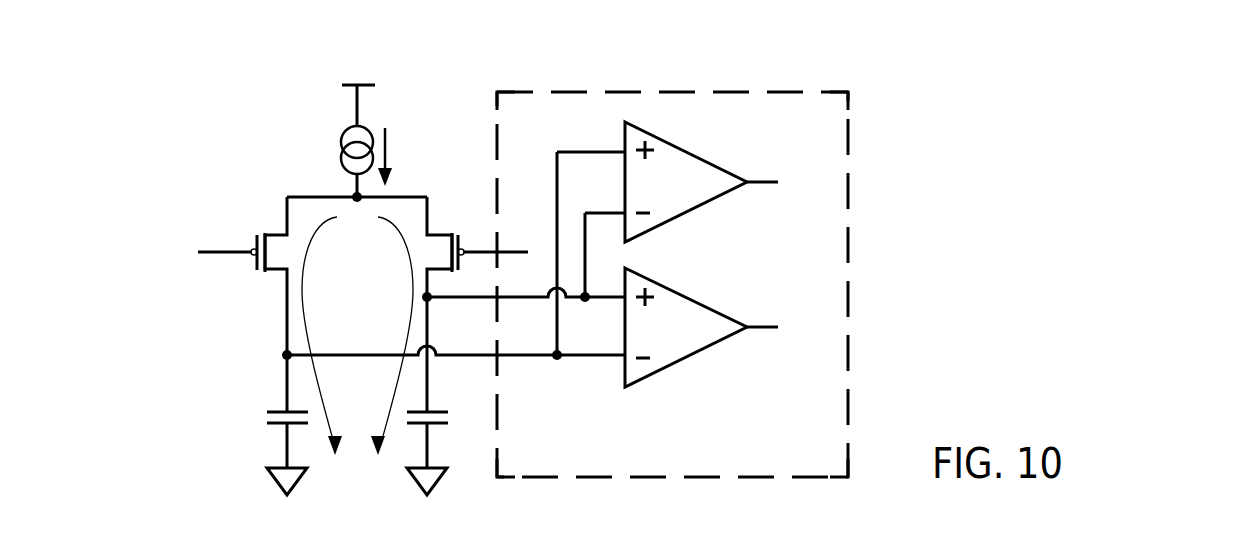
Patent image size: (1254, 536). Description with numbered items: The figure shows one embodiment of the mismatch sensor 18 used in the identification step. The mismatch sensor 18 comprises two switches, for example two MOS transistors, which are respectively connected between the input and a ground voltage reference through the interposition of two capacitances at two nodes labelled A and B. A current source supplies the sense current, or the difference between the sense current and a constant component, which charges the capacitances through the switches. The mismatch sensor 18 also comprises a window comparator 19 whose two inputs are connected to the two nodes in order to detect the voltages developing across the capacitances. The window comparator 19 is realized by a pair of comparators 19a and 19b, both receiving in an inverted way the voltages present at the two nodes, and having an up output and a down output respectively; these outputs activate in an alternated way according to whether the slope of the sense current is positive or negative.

The mismatch sensor 18 is at (457, 73).
The window comparator 19 is at (848, 150).
The comparator 19a is at (698, 205).
The comparator 19b is at (688, 350).